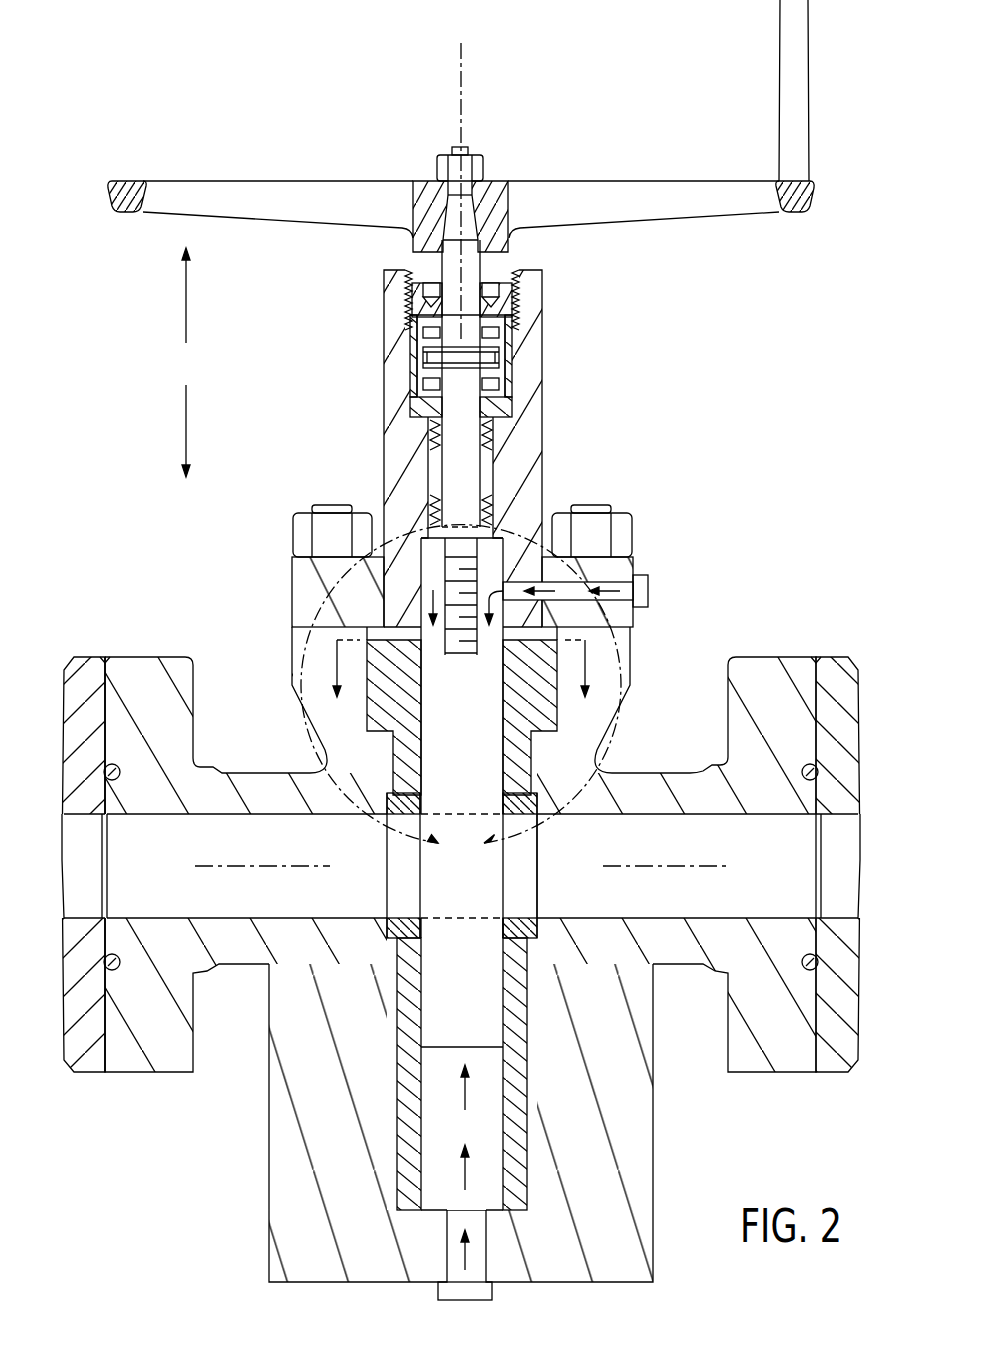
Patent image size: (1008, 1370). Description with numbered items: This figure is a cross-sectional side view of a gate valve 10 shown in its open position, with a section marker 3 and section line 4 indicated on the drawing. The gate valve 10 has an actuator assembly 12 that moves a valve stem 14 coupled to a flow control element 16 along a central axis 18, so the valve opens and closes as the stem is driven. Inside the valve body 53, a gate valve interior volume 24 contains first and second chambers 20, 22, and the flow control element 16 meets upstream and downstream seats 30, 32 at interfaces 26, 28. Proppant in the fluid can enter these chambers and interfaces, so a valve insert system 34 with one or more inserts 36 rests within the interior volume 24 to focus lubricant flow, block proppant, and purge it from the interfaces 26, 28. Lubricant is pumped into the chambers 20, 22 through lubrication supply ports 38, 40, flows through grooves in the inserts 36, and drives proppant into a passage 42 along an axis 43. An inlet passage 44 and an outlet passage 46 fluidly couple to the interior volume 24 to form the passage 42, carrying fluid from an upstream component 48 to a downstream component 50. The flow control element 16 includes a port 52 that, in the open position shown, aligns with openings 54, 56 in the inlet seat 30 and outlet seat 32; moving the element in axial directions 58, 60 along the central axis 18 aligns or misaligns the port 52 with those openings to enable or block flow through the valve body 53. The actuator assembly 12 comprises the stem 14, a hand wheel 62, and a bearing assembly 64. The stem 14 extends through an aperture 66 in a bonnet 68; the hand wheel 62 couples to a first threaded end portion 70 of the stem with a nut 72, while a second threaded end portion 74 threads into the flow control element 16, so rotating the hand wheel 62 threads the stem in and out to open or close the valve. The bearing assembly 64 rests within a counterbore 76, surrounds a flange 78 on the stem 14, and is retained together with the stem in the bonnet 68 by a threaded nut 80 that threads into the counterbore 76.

The detail view 3 is at (461, 699).
The section line 4- 4 is at (459, 677).
The gate valve 10 is at (462, 776).
The actuator assembly 12 is at (347, 153).
The valve stem 14 is at (455, 468).
The flow control element 16 is at (450, 684).
The central axis 18 is at (463, 85).
The first chamber 20 is at (424, 530).
The second chamber 22 is at (487, 1103).
The gate valve interior volume 24 is at (422, 632).
The interface 26 is at (423, 810).
The interface 28 is at (501, 810).
The upstream seat 30 is at (390, 935).
The downstream seat 32 is at (524, 932).
The valve insert system 34 is at (731, 612).
The inserts 36 is at (372, 705).
The lubrication supply port 38 is at (649, 590).
The lubrication supply port 40 is at (438, 1292).
The passage 42 is at (258, 892).
The axis 43 is at (666, 866).
The inlet passage 44 is at (136, 879).
The outlet passage 46 is at (763, 876).
The upstream component 48 is at (70, 668).
The downstream component 50 is at (845, 672).
The port 52 is at (449, 899).
The valve body 53 is at (645, 1240).
The opening 54 is at (387, 875).
The opening 56 is at (524, 893).
The axial direction 58 is at (186, 425).
The axial direction 60 is at (186, 305).
The hand wheel 62 is at (686, 181).
The bearing assembly 64 is at (373, 307).
The aperture 66 is at (488, 422).
The bonnet 68 is at (393, 395).
The first threaded end portion 70 is at (452, 147).
The nut 72 is at (483, 168).
The second threaded end portion 74 is at (479, 583).
The counterbore 76 is at (411, 355).
The flange 78 is at (495, 360).
The threaded nut 80 is at (513, 297).